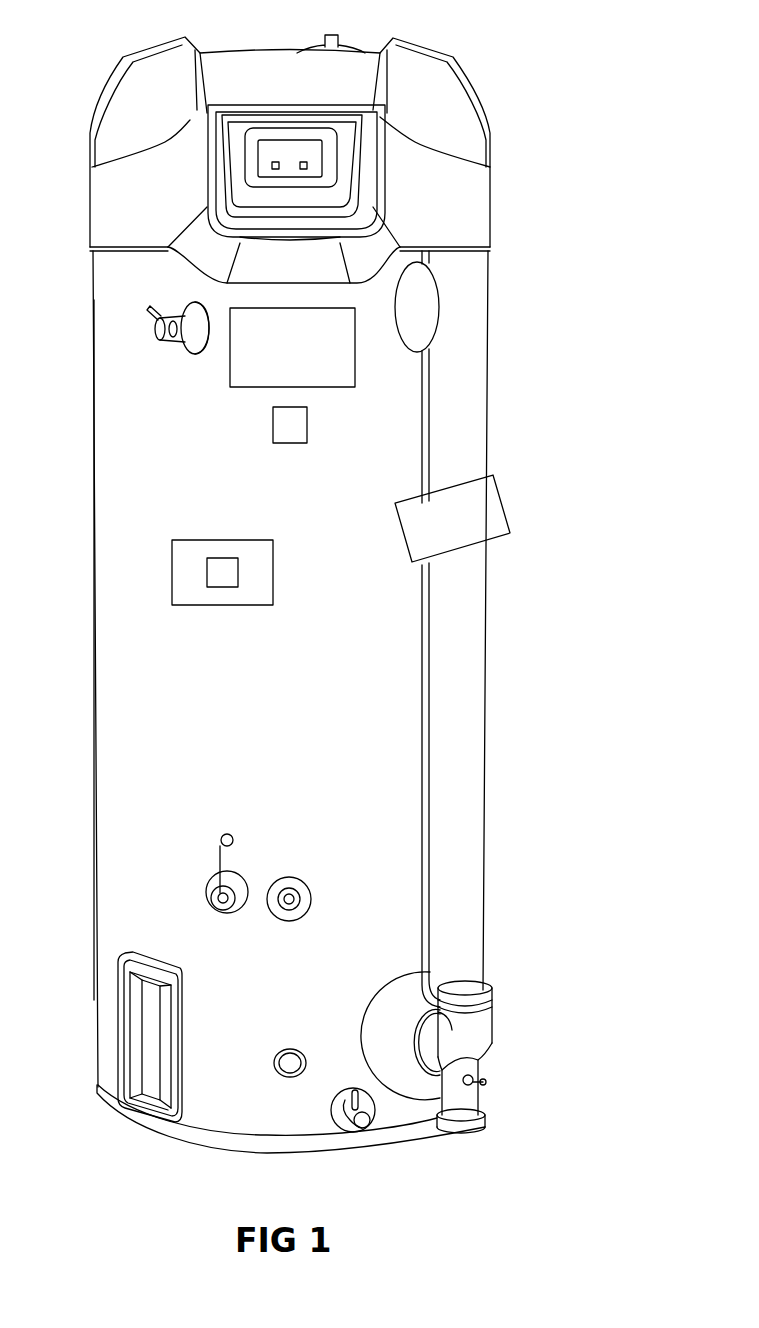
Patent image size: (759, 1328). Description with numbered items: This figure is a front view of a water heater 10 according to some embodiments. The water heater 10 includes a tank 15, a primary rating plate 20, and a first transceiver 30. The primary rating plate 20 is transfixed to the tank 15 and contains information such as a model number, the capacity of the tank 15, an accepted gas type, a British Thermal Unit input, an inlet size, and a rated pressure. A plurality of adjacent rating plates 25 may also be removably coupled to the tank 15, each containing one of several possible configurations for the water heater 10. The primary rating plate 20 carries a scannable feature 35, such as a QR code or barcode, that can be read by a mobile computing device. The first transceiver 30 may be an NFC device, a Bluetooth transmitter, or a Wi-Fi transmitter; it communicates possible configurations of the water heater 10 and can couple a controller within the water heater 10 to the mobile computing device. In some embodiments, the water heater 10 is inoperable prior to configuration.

The water heater 10 is at (575, 42).
The tank 15 is at (95, 588).
The primary rating plate 20 is at (202, 605).
The adjacent rating plate 25 is at (498, 490).
The first transceiver 30 is at (439, 318).
The scannable feature 35 is at (238, 572).